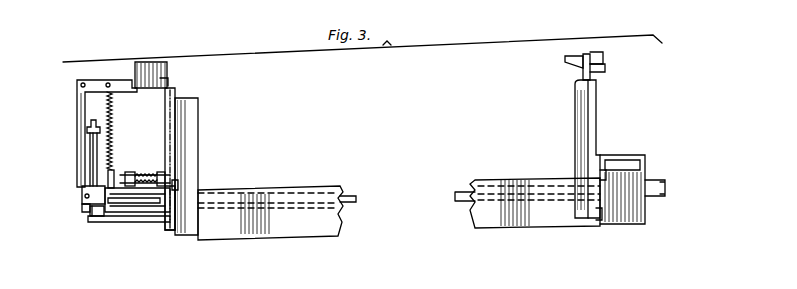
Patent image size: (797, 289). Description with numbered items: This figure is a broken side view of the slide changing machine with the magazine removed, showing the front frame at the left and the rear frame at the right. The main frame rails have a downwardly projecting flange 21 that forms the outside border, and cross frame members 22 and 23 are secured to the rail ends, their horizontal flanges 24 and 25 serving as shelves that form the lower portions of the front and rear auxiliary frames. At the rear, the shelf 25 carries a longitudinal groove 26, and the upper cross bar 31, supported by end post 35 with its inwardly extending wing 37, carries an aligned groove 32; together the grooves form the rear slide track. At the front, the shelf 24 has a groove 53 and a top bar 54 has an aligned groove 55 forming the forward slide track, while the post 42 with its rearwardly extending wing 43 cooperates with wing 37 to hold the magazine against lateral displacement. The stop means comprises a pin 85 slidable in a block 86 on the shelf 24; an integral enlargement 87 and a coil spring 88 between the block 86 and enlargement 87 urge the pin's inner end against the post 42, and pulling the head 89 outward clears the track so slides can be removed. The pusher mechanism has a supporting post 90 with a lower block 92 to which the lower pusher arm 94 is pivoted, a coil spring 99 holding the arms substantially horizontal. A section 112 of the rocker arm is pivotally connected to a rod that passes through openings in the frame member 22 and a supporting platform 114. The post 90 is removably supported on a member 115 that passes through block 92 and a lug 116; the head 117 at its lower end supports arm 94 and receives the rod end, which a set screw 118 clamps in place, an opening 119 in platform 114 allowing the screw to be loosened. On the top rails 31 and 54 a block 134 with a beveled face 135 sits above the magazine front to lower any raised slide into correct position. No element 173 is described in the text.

The flange 21 is at (292, 228).
The cross frame member 22 is at (168, 230).
The cross frame member 23 is at (600, 220).
The horizontal flange 24 is at (138, 205).
The horizontal flange 25 is at (640, 170).
The groove 26 is at (606, 172).
The upper cross bar 31 is at (604, 58).
The groove 32 is at (606, 70).
The end post 35 is at (596, 132).
The wing 37 is at (575, 108).
The post 42 is at (176, 92).
The wing 43 is at (192, 118).
The groove 53 is at (176, 186).
The top bar 54 is at (166, 82).
The groove 55 is at (170, 86).
The pin 85 is at (123, 170).
The block 86 is at (128, 172).
The enlargement 87 is at (160, 172).
The coil spring 88 is at (136, 174).
The head 89 is at (108, 178).
The supporting post 90 is at (78, 101).
The block 92 is at (82, 192).
The pusher arm 94 is at (125, 200).
The coil spring 99 is at (112, 103).
The section 112 is at (666, 188).
The supporting platform 114 is at (116, 222).
The member 115 is at (93, 152).
The lug 116 is at (87, 130).
The head 117 is at (82, 208).
The set screw 118 is at (92, 214).
The opening 119 is at (90, 222).
The block 134 is at (565, 55).
The beveled face 135 is at (565, 66).
The shaft 173 is at (464, 200).